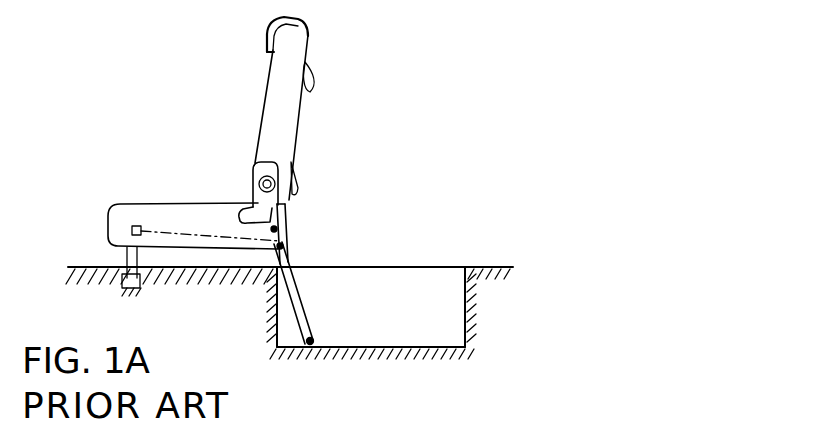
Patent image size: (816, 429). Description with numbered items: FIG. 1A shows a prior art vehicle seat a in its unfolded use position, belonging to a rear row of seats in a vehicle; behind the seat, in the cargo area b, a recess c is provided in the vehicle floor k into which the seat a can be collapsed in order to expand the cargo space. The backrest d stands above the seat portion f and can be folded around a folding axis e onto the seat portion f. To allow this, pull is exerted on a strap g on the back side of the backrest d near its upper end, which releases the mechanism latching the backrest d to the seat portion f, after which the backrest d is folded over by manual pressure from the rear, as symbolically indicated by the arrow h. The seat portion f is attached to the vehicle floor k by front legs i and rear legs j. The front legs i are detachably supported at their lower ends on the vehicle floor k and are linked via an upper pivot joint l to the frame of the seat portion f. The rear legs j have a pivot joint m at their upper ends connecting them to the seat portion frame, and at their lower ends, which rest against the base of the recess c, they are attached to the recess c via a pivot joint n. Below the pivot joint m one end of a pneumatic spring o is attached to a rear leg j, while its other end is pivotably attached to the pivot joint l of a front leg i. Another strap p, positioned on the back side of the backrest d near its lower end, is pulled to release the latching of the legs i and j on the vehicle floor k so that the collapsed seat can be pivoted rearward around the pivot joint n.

The vehicle seat a is at (160, 109).
The cargo area b is at (420, 194).
The recess c is at (394, 319).
The backrest d is at (278, 101).
The folding axis e is at (260, 184).
The seat portion f is at (150, 212).
The strap g is at (314, 82).
The arrow h is at (320, 44).
The front legs i is at (126, 258).
The rear legs j is at (294, 290).
The vehicle floor k is at (487, 265).
The upper pivot joint l is at (134, 228).
The pivot joint m is at (283, 229).
The pivot joint n is at (313, 346).
The pneumatic spring o is at (253, 257).
The strap p is at (299, 179).